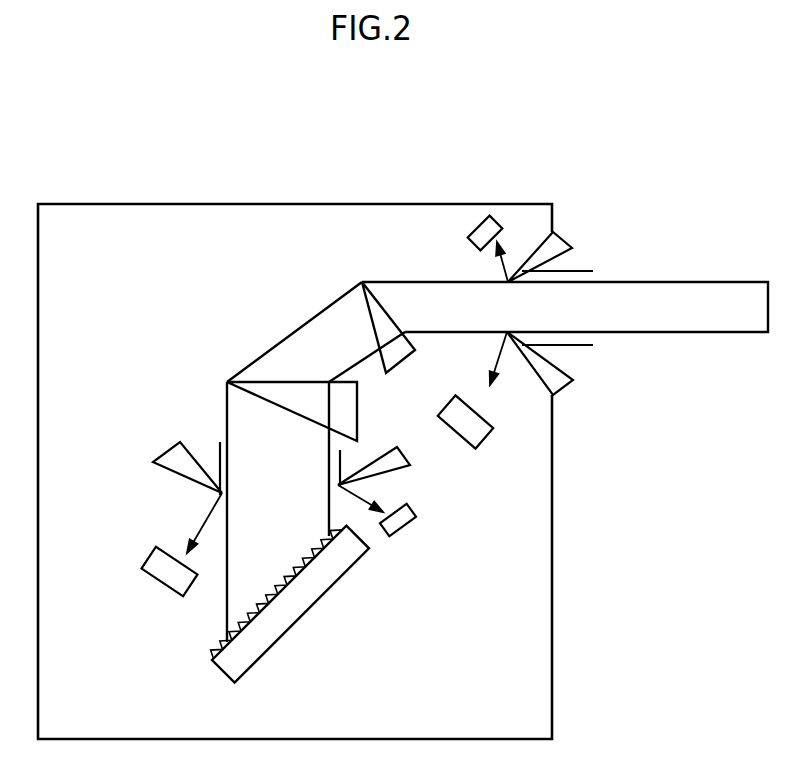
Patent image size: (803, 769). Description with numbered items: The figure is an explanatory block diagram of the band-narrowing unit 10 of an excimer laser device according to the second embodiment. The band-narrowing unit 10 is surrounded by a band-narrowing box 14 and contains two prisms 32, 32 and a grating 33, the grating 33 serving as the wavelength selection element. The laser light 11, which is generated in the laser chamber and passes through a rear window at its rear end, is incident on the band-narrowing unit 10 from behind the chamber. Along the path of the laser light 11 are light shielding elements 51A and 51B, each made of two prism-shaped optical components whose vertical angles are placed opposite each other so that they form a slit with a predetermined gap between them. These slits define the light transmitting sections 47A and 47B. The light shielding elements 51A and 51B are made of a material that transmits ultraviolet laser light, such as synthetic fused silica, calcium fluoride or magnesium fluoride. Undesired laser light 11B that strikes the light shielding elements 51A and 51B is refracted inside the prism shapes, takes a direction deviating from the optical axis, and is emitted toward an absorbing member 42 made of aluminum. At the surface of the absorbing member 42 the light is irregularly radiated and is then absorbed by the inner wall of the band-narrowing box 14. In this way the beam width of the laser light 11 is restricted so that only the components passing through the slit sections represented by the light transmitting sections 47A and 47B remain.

The band-narrowing unit 10 is at (305, 187).
The laser light 11 is at (713, 322).
The band-narrowing box 14 is at (172, 204).
The prism 32 is at (362, 280).
The grating 33 is at (360, 550).
The absorbing member 42 is at (483, 214).
The undesired laser light 11B is at (506, 270).
The light transmitting section 47A is at (492, 294).
The light transmitting section 47B is at (257, 493).
The light shielding element 51A is at (553, 232).
The light shielding element 51B is at (168, 457).